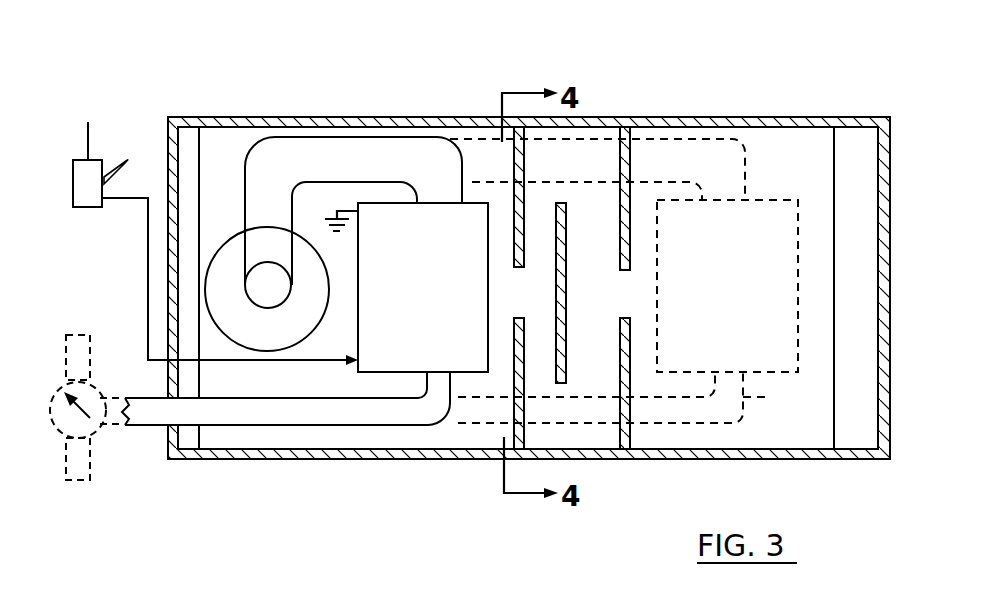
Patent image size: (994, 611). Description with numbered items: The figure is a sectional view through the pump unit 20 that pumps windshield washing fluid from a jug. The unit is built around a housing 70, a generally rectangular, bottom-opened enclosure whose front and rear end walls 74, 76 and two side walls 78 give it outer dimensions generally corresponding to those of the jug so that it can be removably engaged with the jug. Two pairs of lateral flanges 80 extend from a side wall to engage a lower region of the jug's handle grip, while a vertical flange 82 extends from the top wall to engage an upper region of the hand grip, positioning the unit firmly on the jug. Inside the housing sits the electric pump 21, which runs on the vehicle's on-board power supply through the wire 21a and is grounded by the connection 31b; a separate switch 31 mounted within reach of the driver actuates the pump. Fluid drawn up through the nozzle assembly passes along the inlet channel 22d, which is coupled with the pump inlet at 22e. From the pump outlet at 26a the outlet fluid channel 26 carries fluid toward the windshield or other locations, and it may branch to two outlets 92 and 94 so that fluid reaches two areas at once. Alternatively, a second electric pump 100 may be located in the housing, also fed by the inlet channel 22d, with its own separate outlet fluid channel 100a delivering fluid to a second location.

The pump unit 20 is at (814, 103).
The electric pump 21 is at (443, 288).
The wire 21a is at (148, 282).
The inlet channel 22d is at (335, 150).
The pump inlet coupling 22e is at (467, 183).
The outlet fluid channel 26 is at (366, 412).
The pump outlet coupling 26a is at (452, 390).
The switch 31 is at (80, 199).
The ground connection 31b is at (357, 215).
The housing 70 is at (230, 117).
The front end wall 74 is at (166, 165).
The rear end wall 76 is at (889, 242).
The side walls 78 is at (692, 117).
The lateral flanges 80 is at (525, 413).
The vertical flange 82 is at (567, 320).
The outlet 92 is at (93, 348).
The outlet 94 is at (92, 442).
The second electric pump 100 is at (754, 306).
The separate outlet fluid channel 100a is at (750, 398).